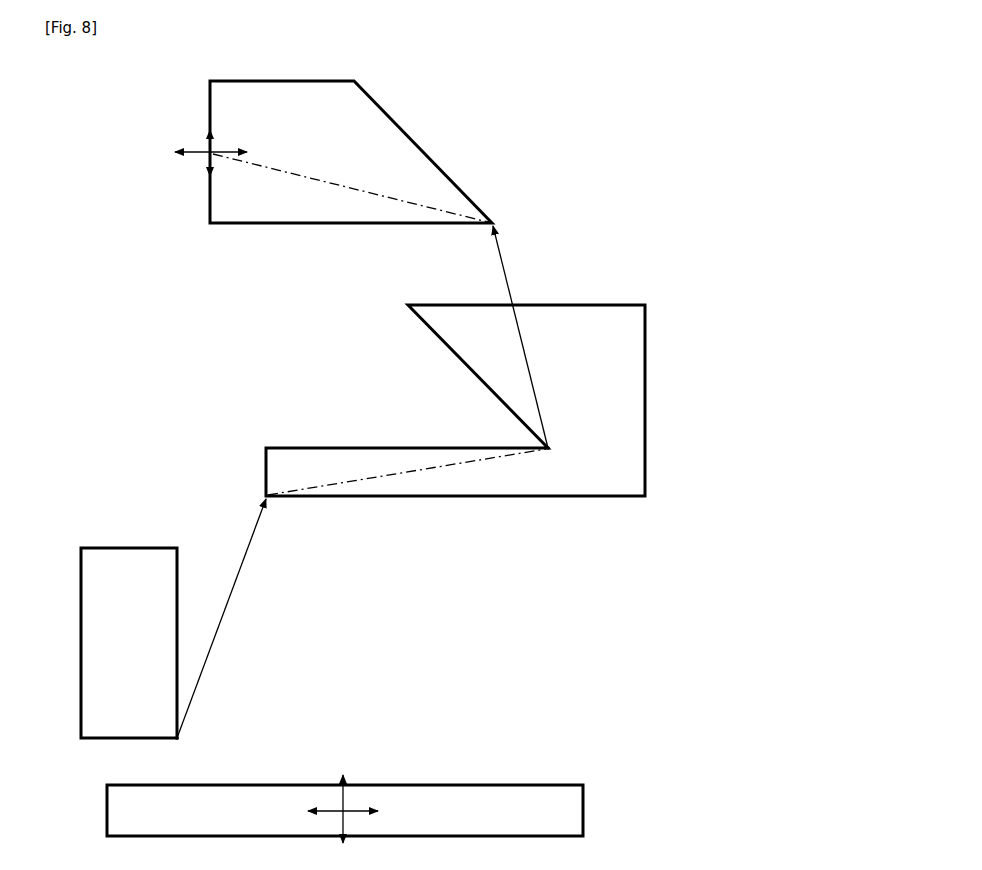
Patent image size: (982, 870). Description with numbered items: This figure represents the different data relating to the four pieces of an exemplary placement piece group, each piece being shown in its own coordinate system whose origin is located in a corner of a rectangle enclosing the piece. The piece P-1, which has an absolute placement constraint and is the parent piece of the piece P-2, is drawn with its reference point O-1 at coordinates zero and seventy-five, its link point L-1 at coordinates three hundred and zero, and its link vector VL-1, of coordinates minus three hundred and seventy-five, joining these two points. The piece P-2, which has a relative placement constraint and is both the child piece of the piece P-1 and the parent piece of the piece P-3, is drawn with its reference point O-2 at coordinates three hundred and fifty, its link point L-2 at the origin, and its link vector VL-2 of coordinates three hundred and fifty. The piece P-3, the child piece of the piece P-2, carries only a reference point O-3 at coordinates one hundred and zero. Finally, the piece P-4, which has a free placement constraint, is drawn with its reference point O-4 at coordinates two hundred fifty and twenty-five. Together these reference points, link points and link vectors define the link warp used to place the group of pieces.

The piece P-1 is at (313, 129).
The piece P-2 is at (583, 392).
The piece P-3 is at (148, 657).
The piece P-4 is at (150, 822).
The reference point O-1 is at (210, 153).
The reference point O-2 is at (550, 450).
The reference point O-3 is at (179, 740).
The reference point O-4 is at (344, 812).
The link point L-1 is at (494, 223).
The link point L-2 is at (265, 495).
The link vector VL-1 is at (352, 187).
The link vector VL-2 is at (407, 472).